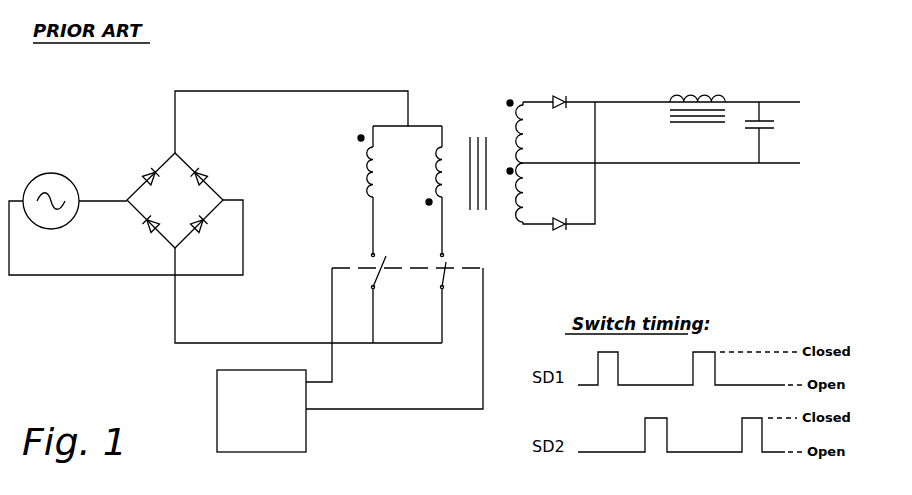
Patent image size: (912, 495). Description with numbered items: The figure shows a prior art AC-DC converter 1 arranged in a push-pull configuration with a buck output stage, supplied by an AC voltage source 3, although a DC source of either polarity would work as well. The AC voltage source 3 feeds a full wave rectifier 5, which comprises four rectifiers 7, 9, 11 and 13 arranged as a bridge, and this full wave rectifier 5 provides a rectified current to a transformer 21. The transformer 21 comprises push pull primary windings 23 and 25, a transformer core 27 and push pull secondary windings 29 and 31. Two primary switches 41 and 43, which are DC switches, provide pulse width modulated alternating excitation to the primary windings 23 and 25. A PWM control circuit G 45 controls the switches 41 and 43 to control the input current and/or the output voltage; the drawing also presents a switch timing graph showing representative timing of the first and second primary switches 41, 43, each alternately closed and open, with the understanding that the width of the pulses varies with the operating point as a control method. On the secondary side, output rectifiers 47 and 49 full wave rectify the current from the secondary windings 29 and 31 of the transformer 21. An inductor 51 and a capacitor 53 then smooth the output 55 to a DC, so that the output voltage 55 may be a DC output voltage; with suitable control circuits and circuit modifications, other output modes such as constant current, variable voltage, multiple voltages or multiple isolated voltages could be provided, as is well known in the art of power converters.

The AC-DC converter 1 is at (153, 90).
The AC voltage source 3 is at (65, 163).
The full wave rectifier 5 is at (152, 155).
The rectifier 7 is at (203, 168).
The rectifier 9 is at (152, 230).
The rectifier 11 is at (212, 228).
The rectifier 13 is at (137, 182).
The transformer 21 is at (451, 100).
The push pull primary winding 23 is at (362, 175).
The push pull primary winding 25 is at (423, 182).
The transformer core 27 is at (462, 135).
The push pull secondary winding 29 is at (513, 123).
The push pull secondary winding 31 is at (507, 212).
The primary switch SD1 41 is at (386, 278).
The primary switch SD2 43 is at (448, 272).
The PWM control circuit G 45 is at (217, 392).
The output rectifier 47 is at (557, 228).
The output rectifier 49 is at (554, 95).
The inductor 51 is at (683, 94).
The capacitor 53 is at (745, 138).
The output Vo 55 is at (837, 117).